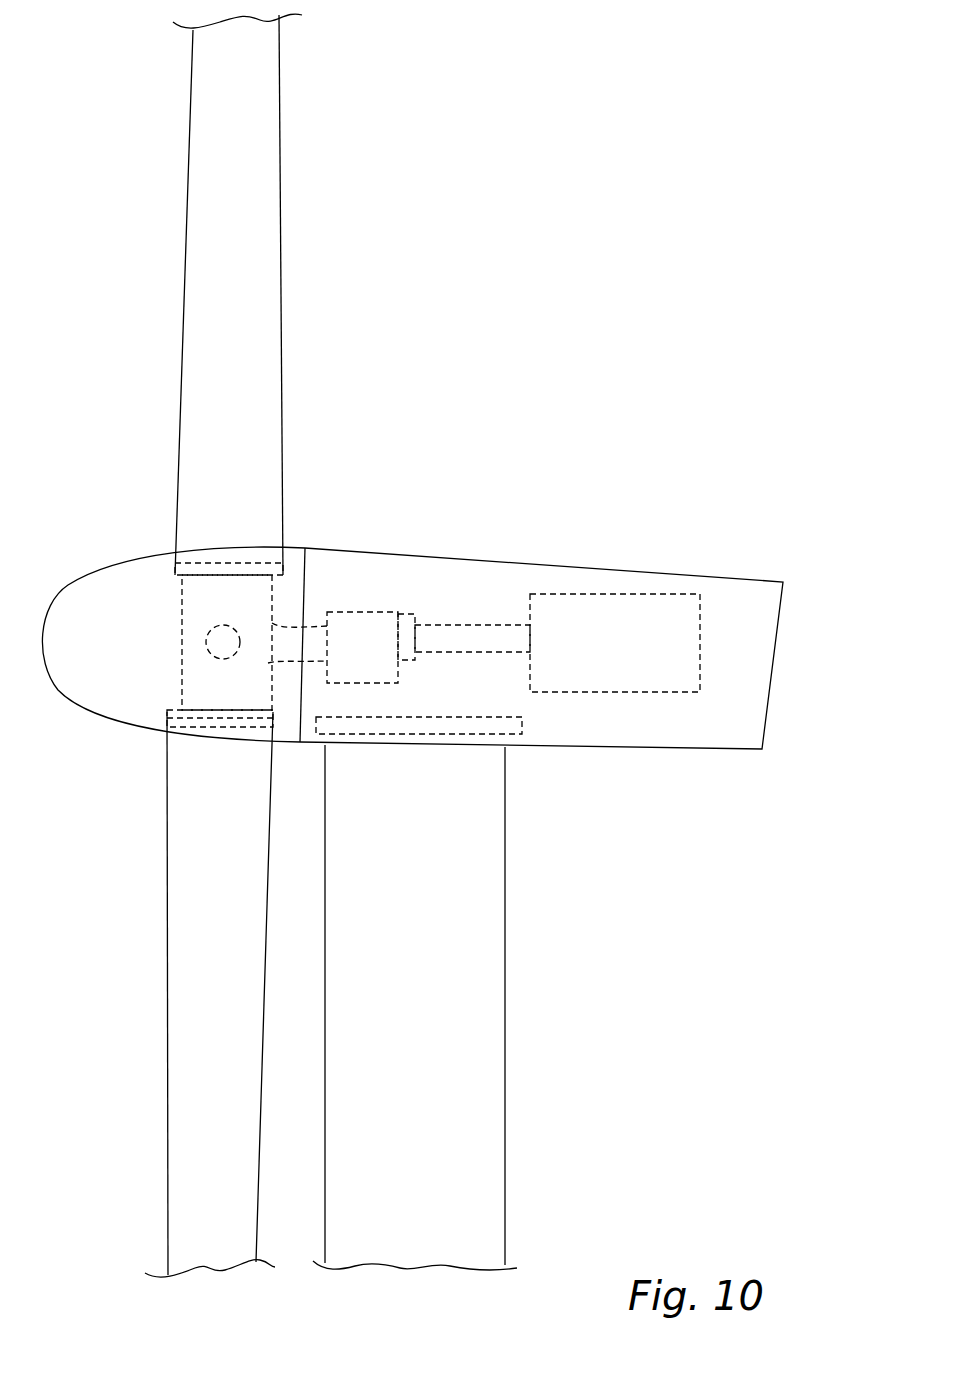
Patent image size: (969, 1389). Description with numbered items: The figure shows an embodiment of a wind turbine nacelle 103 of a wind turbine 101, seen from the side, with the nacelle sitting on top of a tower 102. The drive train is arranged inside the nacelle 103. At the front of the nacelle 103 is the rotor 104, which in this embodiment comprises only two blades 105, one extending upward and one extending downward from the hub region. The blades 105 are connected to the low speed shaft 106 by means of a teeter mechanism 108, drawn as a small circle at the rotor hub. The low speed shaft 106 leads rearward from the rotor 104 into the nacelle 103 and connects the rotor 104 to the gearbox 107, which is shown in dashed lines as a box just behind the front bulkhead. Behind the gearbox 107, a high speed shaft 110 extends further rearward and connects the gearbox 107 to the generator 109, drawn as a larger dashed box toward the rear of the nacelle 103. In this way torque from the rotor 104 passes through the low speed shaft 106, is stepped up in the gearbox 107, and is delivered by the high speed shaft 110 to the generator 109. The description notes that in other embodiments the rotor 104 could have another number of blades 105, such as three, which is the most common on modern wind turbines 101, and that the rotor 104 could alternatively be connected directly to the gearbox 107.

The wind turbine 101 is at (652, 1004).
The tower 102 is at (485, 1093).
The wind turbine nacelle 103 is at (668, 720).
The rotor 104 is at (130, 582).
The blades 105 is at (210, 263).
The low speed shaft 106 is at (288, 655).
The gearbox 107 is at (357, 618).
The teeter mechanism 108 is at (217, 642).
The generator 109 is at (645, 603).
The high speed shaft 110 is at (438, 628).